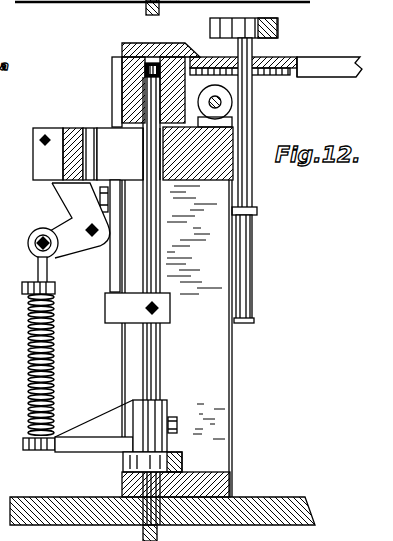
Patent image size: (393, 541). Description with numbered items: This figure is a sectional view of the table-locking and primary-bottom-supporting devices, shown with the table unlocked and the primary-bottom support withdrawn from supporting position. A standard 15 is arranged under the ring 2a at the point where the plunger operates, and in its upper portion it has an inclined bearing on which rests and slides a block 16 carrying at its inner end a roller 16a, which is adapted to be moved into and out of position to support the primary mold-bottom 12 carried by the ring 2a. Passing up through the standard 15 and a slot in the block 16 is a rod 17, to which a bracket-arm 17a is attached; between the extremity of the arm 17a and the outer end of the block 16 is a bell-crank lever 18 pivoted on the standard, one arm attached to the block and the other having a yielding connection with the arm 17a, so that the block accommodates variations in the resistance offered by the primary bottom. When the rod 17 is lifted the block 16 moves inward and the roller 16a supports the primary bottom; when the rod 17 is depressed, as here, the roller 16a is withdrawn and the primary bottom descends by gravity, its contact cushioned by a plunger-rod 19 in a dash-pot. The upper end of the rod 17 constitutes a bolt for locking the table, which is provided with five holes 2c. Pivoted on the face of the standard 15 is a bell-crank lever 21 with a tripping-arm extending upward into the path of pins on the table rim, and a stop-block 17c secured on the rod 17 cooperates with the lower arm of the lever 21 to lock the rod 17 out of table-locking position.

The ring 2a is at (338, 70).
The holes 2c is at (122, 55).
The primary mold-bottom 12 is at (278, 24).
The standard 15 is at (207, 440).
The block 16 is at (205, 153).
The roller 16a is at (222, 100).
The rod 17 is at (155, 355).
The bracket-arm 17a is at (100, 433).
The stop-block 17c is at (117, 305).
The bell-crank lever 18 is at (72, 243).
The plunger-rod 19 is at (252, 272).
The bell-crank lever 21 is at (115, 268).